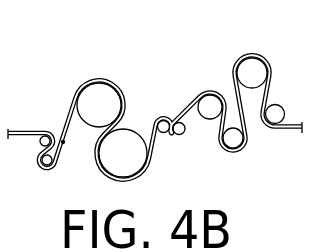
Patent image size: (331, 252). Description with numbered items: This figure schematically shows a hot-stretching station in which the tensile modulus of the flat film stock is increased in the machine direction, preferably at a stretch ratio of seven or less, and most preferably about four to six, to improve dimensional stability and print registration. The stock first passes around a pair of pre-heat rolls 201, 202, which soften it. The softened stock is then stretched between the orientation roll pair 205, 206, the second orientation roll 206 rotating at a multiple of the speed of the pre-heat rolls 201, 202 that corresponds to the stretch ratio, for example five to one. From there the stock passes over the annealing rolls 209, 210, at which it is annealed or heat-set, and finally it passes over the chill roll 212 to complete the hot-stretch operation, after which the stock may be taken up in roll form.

The pre-heat roll 201 is at (95, 97).
The pre-heat roll 202 is at (118, 165).
The orientation roll 205 is at (160, 121).
The orientation roll 206 is at (178, 123).
The annealing roll 209 is at (210, 107).
The annealing roll 210 is at (235, 140).
The chill roll 212 is at (253, 67).